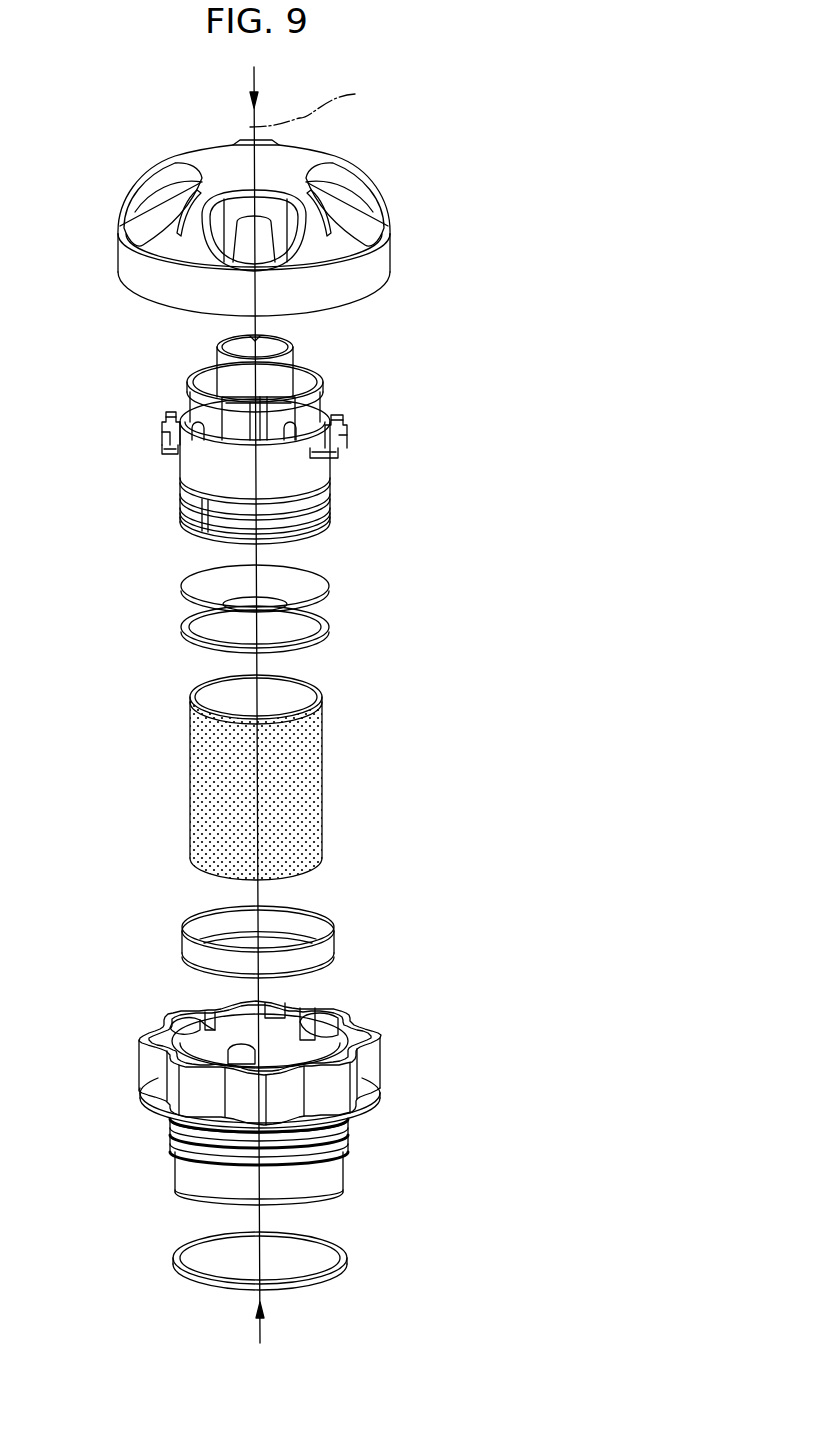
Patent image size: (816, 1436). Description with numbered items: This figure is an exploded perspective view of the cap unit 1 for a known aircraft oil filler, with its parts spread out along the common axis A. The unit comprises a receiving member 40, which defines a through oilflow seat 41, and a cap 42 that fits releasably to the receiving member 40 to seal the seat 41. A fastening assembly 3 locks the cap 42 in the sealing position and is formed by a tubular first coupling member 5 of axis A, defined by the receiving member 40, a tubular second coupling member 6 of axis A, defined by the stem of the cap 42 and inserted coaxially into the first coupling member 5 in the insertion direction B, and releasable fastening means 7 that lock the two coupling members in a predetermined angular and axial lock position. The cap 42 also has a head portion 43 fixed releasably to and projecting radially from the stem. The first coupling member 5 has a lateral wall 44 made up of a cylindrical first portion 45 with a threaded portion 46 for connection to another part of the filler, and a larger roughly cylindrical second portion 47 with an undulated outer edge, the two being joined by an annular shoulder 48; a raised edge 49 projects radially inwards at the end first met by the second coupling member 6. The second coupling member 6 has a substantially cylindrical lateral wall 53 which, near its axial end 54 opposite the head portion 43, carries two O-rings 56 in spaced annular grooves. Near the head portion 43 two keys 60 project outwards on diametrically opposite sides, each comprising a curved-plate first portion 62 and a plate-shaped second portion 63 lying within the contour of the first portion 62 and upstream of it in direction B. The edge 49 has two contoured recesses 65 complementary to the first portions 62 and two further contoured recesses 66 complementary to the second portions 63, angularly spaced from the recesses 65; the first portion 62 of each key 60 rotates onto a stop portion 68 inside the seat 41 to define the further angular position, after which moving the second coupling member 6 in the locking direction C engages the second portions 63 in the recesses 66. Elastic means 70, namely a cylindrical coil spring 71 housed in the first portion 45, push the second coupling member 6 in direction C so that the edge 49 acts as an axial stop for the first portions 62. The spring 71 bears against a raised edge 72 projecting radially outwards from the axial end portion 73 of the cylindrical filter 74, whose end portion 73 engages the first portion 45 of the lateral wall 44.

The axis A is at (313, 104).
The insertion direction B is at (250, 82).
The locking direction C is at (258, 1333).
The cap unit 1 is at (472, 355).
The fastening assembly 3 is at (155, 672).
The first coupling member 5 is at (90, 1085).
The second coupling member 6 is at (142, 475).
The releasable fastening means 7 is at (372, 897).
The receiving member 40 is at (378, 1122).
The through oilflow seat 41 is at (216, 1022).
The cap 42 is at (416, 232).
The head portion 43 is at (218, 168).
The lateral wall 44 is at (395, 1081).
The cylindrical first portion 45 is at (190, 1173).
The threaded portion 46 is at (342, 1147).
The second portion 47 is at (378, 1055).
The annular shoulder 48 is at (150, 1124).
The raised edge 49 is at (282, 1018).
The lateral wall 53 is at (303, 468).
The axial end 54 is at (182, 528).
The O-rings 56 is at (187, 500).
The keys 60 is at (155, 425).
The first portion 62 is at (167, 453).
The second portion 63 is at (168, 425).
The contoured recesses 65 is at (176, 1030).
The contoured recesses 66 is at (240, 1030).
The stop portion 68 is at (317, 1043).
The elastic means 70 is at (187, 916).
The cylindrical coil spring 71 is at (322, 910).
The raised edge 72 is at (313, 690).
The axial end portion 73 is at (313, 713).
The cylindrical filter 74 is at (292, 770).